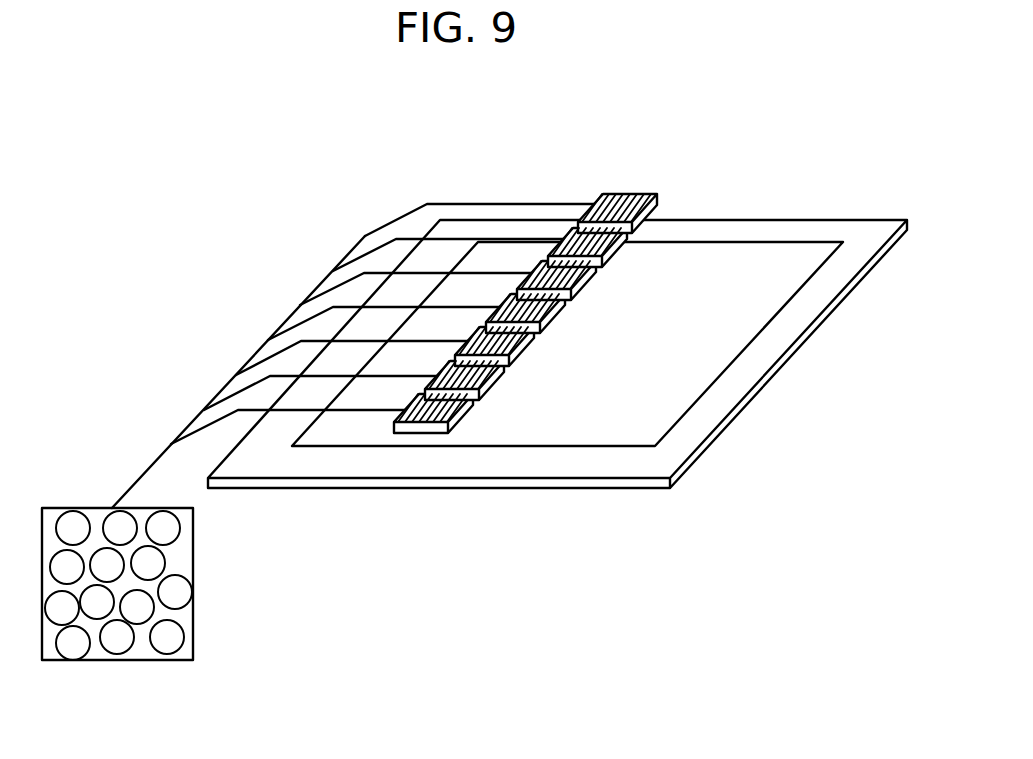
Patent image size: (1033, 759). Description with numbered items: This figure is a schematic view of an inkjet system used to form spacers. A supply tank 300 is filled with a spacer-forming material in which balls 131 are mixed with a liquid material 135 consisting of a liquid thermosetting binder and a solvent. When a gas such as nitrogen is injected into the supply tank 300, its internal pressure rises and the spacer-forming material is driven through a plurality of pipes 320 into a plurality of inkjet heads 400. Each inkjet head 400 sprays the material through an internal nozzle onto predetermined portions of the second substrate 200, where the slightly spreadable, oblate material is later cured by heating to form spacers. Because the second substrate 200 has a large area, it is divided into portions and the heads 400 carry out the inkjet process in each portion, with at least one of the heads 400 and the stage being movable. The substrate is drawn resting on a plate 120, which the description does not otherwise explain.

The substrate plate 120 is at (792, 327).
The second substrate 200 is at (762, 243).
The pipes 320 is at (383, 224).
The inkjet heads 400 is at (656, 182).
The supply tank 300 is at (193, 524).
The liquid material 135 is at (177, 565).
The balls 131 is at (168, 637).